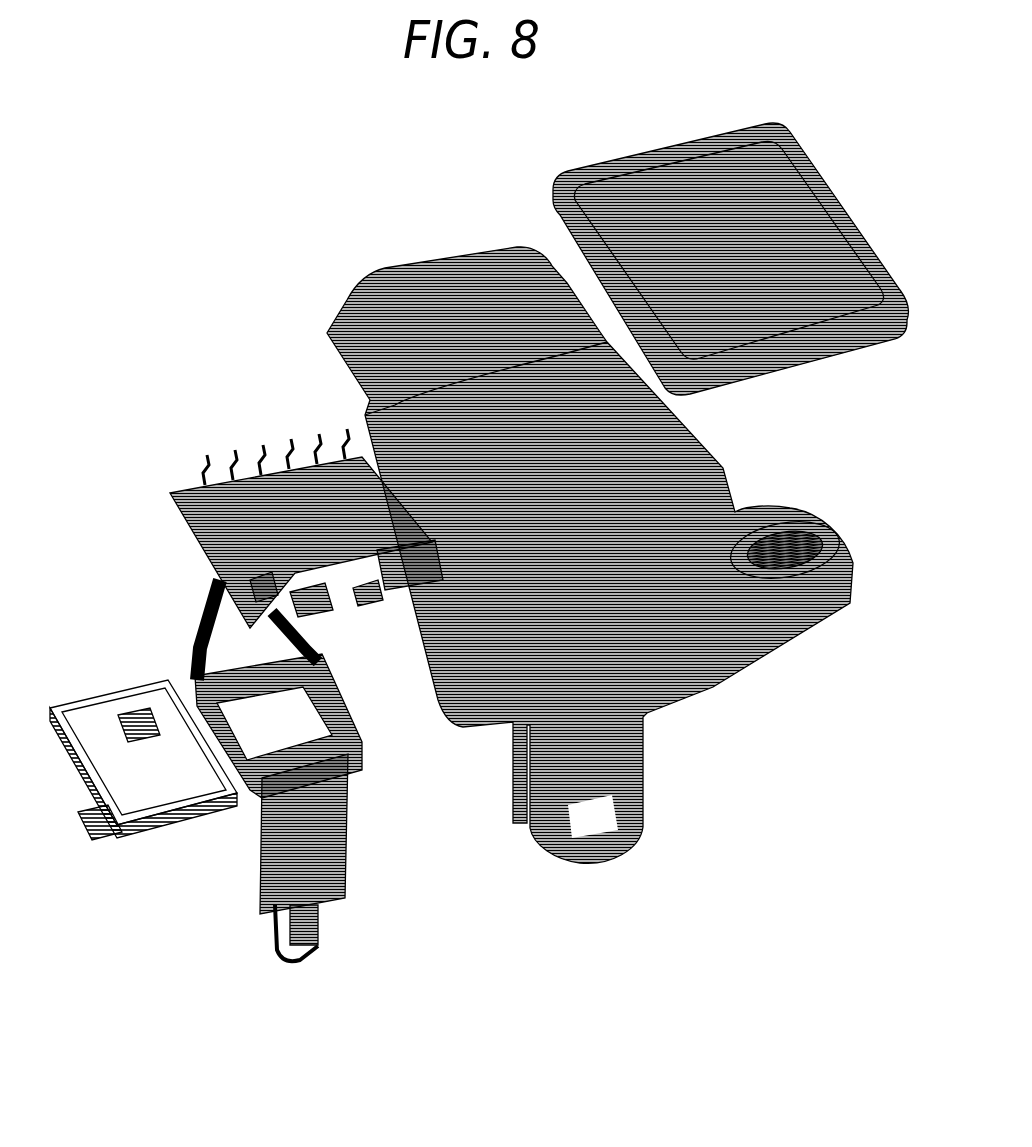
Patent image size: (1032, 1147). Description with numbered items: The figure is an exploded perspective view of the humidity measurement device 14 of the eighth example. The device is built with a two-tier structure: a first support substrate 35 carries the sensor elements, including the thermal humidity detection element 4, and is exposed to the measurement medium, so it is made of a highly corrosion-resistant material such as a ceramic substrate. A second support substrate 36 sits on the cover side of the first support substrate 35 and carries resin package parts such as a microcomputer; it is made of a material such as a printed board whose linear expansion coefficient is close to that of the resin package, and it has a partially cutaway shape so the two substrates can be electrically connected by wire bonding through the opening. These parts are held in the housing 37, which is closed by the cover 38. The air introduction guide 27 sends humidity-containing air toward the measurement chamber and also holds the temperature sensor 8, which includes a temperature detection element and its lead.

The humidity measurement device 14 is at (280, 285).
The cover 38 is at (637, 200).
The second support substrate 36 is at (207, 513).
The housing 37 is at (778, 573).
The first support substrate 35 is at (113, 697).
The air introduction guide 27 is at (282, 868).
The temperature sensor 8 is at (317, 920).
The thermal humidity detection element 4 is at (100, 832).